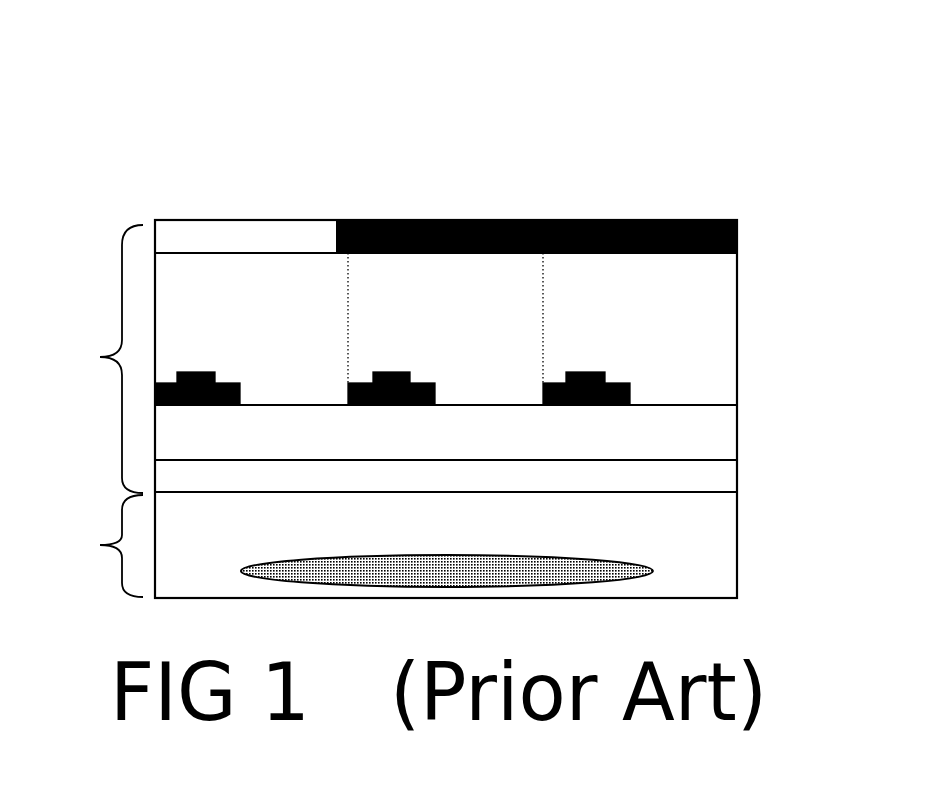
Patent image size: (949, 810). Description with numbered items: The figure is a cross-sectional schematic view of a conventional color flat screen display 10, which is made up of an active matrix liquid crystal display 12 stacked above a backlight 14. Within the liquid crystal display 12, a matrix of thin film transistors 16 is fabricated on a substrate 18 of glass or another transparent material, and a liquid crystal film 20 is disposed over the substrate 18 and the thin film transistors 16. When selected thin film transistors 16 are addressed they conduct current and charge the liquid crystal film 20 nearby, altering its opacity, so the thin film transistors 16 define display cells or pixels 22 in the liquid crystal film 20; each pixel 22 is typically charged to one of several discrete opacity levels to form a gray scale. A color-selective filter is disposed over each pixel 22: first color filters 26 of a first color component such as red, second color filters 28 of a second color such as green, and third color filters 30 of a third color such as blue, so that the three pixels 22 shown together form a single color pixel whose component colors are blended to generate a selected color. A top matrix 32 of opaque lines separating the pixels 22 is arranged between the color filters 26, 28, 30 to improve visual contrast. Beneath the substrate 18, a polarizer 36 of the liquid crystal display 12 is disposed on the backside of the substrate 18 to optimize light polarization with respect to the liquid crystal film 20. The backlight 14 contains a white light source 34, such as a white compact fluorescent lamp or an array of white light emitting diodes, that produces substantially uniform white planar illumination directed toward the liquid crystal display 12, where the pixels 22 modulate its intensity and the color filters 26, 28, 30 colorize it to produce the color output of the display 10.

The flat screen display 10 is at (852, 190).
The active matrix liquid crystal display 12 is at (96, 359).
The backlight 14 is at (393, 544).
The thin film transistors 16 is at (228, 383).
The substrate 18 is at (722, 427).
The liquid crystal film 20 is at (716, 340).
The pixels 22 is at (257, 325).
The first color filters 26 is at (237, 222).
The second color filters 28 is at (435, 220).
The third color filters 30 is at (635, 219).
The top matrix 32 is at (347, 219).
The white light source 34 is at (473, 553).
The polarizer 36 is at (727, 473).